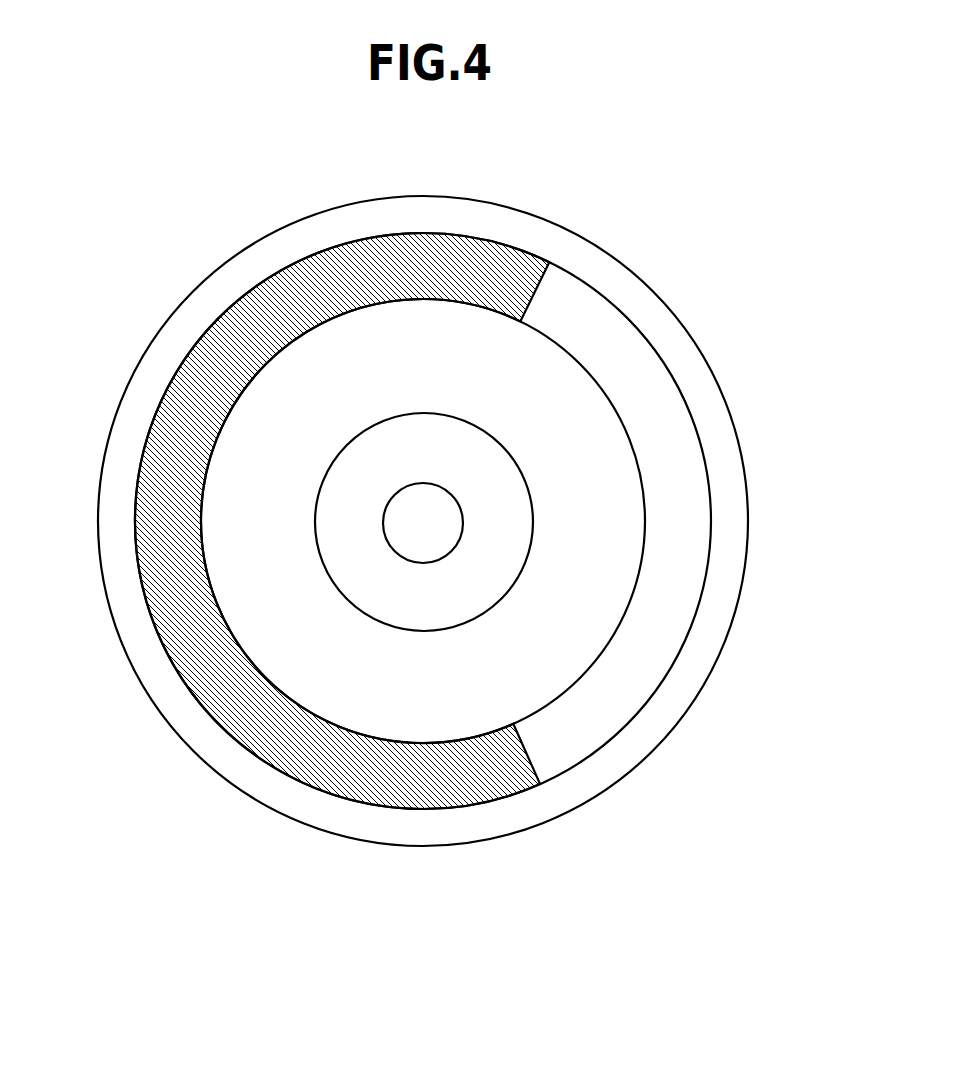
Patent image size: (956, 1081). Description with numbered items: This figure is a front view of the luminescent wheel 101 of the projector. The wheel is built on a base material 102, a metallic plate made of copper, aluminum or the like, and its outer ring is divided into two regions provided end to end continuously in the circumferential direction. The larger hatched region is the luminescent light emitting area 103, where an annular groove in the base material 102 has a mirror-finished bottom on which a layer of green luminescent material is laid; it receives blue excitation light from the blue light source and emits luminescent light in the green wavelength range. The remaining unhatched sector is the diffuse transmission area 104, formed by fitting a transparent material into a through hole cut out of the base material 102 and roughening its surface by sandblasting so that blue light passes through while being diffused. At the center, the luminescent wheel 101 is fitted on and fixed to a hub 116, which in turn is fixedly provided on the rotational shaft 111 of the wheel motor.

The luminescent wheel 101 is at (248, 819).
The base material 102 is at (675, 667).
The luminescent light emitting area 103 is at (185, 403).
The diffuse transmission area 104 is at (643, 395).
The rotational shaft 111 is at (424, 520).
The hub 116 is at (467, 572).